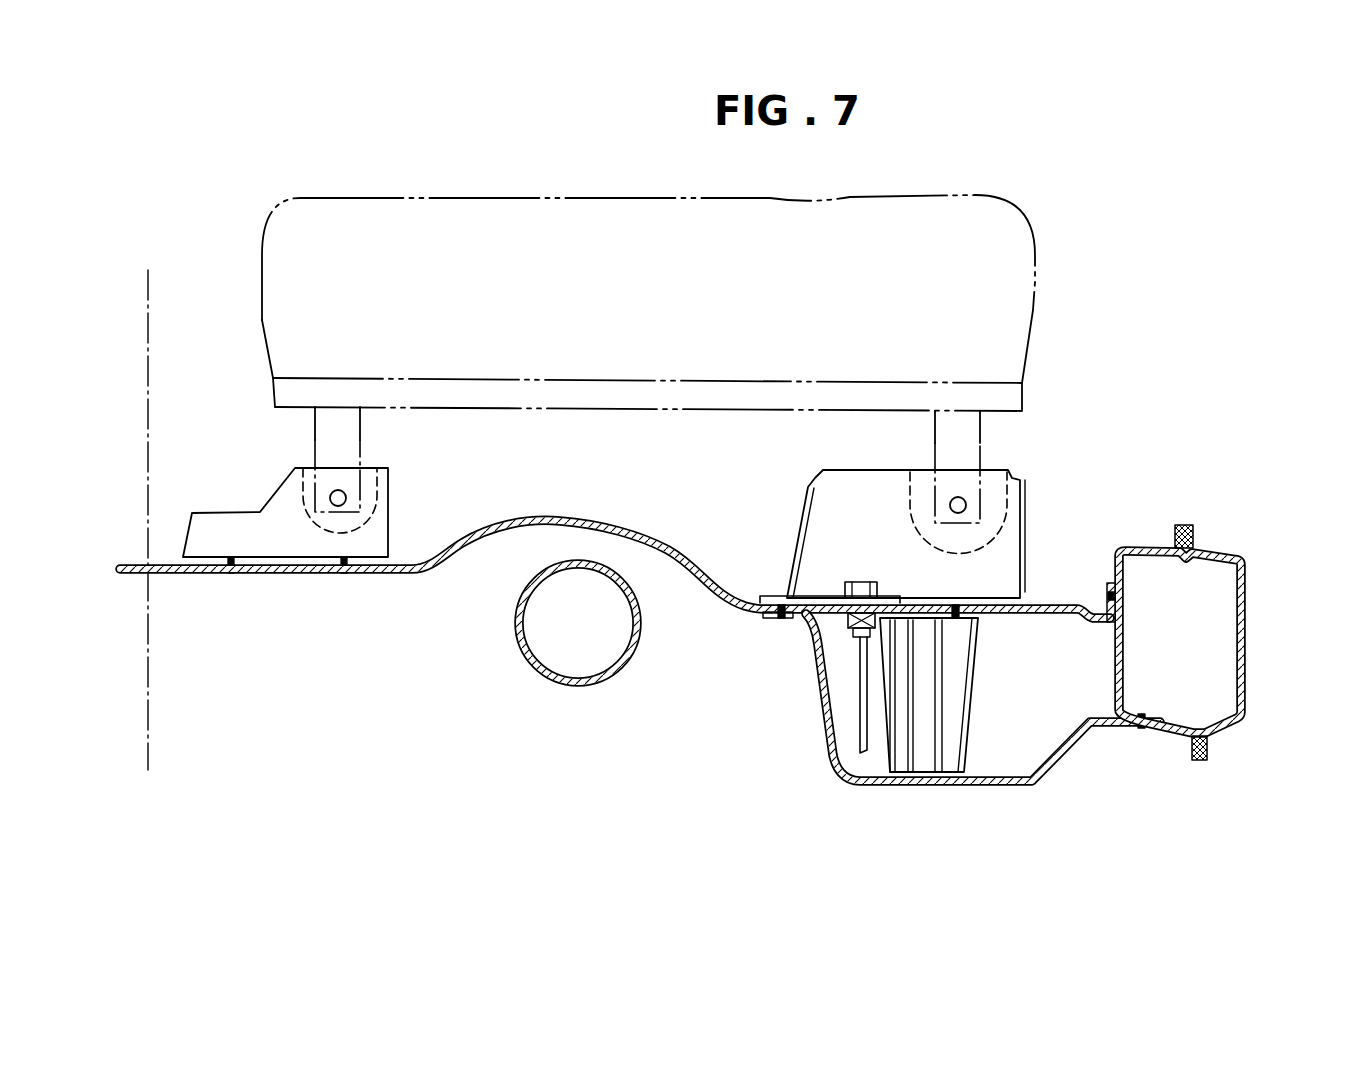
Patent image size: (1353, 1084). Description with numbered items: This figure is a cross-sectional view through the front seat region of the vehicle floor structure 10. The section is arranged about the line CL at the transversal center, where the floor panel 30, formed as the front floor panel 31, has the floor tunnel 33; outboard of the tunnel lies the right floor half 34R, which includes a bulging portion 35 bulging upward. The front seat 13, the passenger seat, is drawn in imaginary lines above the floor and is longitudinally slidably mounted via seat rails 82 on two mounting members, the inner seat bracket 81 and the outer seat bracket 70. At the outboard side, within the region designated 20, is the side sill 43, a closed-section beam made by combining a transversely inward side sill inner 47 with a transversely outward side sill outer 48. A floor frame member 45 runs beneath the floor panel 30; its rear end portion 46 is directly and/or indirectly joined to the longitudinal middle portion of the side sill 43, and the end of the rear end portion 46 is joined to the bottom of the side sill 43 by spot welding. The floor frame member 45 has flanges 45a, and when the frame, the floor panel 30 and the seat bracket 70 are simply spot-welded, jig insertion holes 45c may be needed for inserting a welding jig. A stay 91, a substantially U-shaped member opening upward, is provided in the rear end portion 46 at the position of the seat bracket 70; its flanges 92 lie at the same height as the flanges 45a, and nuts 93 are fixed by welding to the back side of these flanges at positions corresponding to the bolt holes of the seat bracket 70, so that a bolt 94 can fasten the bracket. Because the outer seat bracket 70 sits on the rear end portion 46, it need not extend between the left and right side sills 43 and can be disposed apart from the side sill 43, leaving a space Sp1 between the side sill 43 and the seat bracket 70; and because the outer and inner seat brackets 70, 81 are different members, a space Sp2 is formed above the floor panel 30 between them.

The motorcycle 10 is at (231, 158).
The front seat 13 is at (1035, 282).
The fuel tank 20 is at (1225, 700).
The floor panel 30 is at (615, 575).
The front floor panel 31 is at (1006, 533).
The floor tunnel 33 is at (615, 568).
The right floor half 34R is at (1062, 600).
The bulging portion 35 is at (554, 516).
The side sill 43 is at (1197, 711).
The floor frame member 45 is at (913, 771).
The flange 45a is at (770, 617).
The jig insertion hole 45c is at (913, 753).
The rear end portion 46 is at (913, 753).
The side sill inner 47 is at (1188, 683).
The side sill outer 48 is at (1235, 725).
The outer seat bracket 70 is at (1043, 494).
The inner seat bracket 81 is at (372, 548).
The seat rail 82 is at (311, 423).
The stay 91 is at (845, 738).
The flange 92 is at (850, 633).
The nut 93 is at (866, 729).
The bolt 94 is at (857, 583).
The space Sp1 is at (1093, 575).
The space Sp2 is at (481, 471).
The center line CL is at (148, 330).